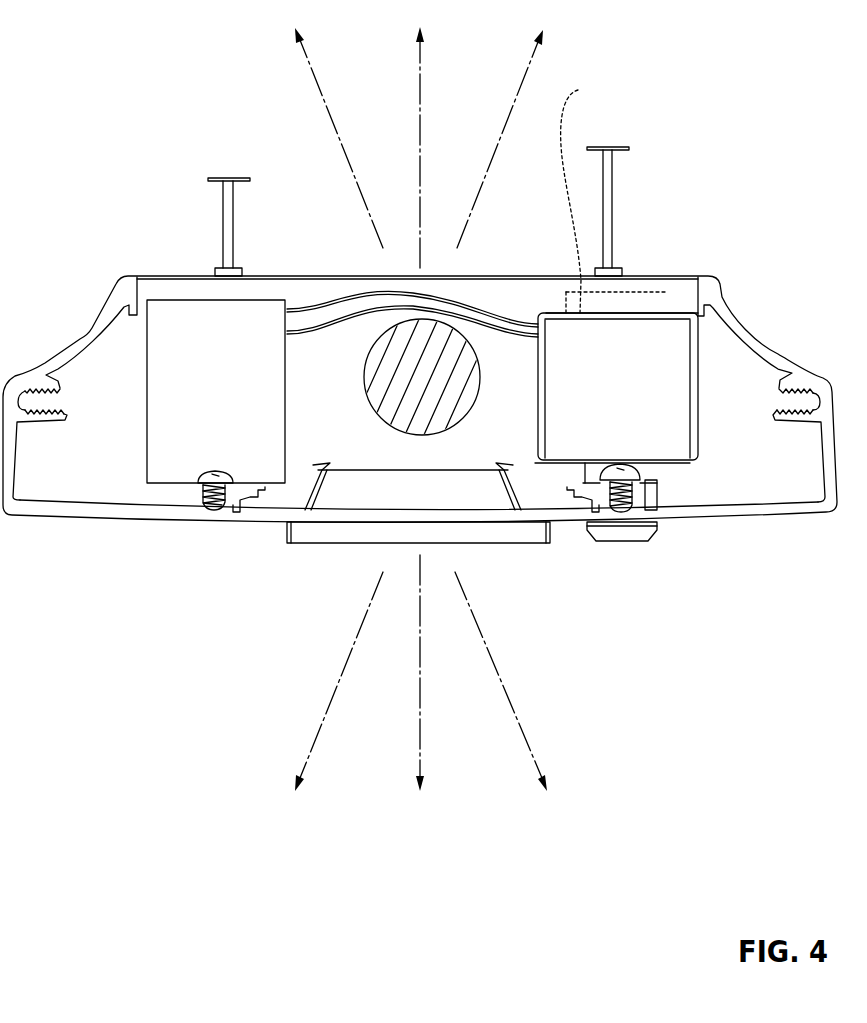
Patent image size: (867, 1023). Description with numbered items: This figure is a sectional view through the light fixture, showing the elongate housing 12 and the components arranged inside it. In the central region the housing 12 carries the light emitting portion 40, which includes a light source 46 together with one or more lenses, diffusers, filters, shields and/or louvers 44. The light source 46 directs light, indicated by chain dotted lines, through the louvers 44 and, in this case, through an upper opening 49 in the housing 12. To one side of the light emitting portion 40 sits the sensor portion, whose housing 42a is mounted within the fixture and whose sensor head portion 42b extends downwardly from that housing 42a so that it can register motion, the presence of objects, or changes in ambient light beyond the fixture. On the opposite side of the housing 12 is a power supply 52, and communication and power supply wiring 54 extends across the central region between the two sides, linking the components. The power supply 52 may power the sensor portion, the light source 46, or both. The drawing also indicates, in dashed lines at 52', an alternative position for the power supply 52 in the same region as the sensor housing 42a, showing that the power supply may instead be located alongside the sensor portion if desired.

The housing 12 is at (755, 302).
The light emitting portion 40 is at (483, 452).
The housing 42a is at (620, 340).
The sensor head portion 42b is at (653, 533).
The louvers 44 is at (550, 537).
The light source 46 is at (433, 310).
The upper opening 49 is at (680, 293).
The power supply 52 is at (159, 278).
The power supply 52' is at (614, 193).
The communication and power supply wiring 54 is at (323, 307).